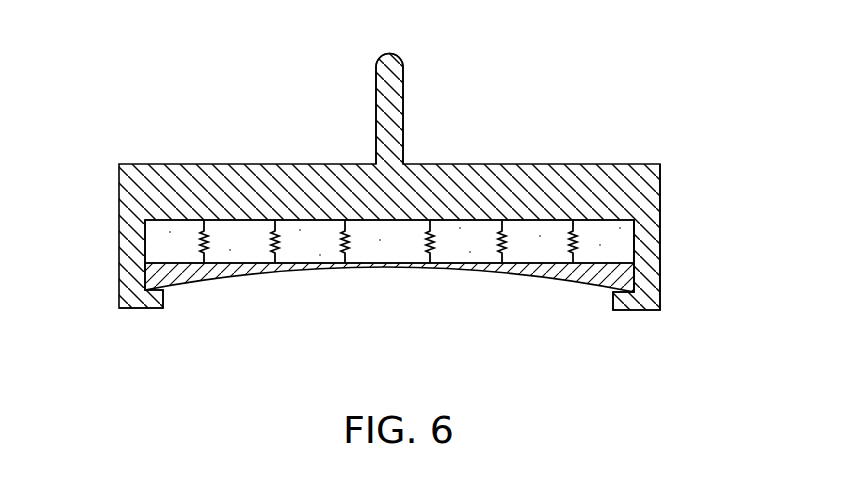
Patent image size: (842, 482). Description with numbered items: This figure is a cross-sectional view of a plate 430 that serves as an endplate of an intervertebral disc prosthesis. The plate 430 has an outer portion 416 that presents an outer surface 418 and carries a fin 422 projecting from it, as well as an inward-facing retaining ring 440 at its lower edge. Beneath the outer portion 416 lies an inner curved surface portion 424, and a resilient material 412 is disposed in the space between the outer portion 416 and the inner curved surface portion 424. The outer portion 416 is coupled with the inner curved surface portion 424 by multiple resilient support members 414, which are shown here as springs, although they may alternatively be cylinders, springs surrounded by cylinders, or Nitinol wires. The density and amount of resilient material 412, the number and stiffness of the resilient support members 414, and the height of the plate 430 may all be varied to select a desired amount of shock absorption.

The plate 430 is at (580, 85).
The outer surface 418 is at (215, 155).
The outer portion 416 is at (641, 191).
The fin 422 is at (411, 106).
The resilient material 412 is at (163, 240).
The resilient support members 414 is at (449, 246).
The inner curved surface portion 424 is at (305, 294).
The inward-facing retaining ring 440 is at (176, 302).